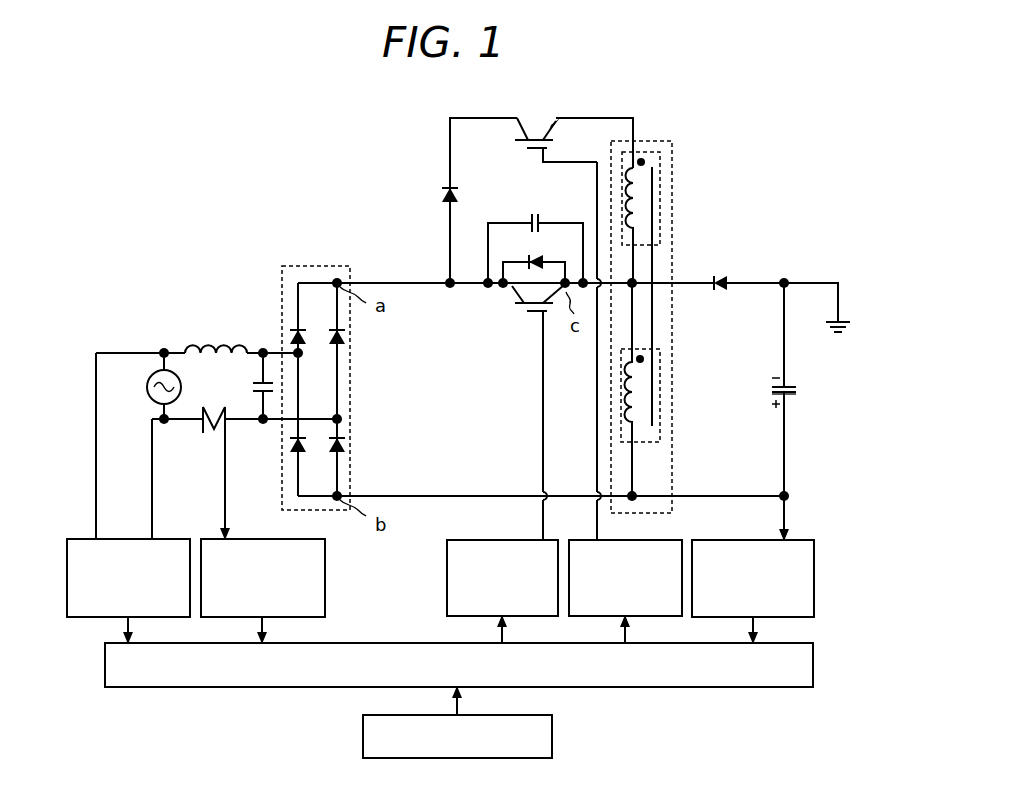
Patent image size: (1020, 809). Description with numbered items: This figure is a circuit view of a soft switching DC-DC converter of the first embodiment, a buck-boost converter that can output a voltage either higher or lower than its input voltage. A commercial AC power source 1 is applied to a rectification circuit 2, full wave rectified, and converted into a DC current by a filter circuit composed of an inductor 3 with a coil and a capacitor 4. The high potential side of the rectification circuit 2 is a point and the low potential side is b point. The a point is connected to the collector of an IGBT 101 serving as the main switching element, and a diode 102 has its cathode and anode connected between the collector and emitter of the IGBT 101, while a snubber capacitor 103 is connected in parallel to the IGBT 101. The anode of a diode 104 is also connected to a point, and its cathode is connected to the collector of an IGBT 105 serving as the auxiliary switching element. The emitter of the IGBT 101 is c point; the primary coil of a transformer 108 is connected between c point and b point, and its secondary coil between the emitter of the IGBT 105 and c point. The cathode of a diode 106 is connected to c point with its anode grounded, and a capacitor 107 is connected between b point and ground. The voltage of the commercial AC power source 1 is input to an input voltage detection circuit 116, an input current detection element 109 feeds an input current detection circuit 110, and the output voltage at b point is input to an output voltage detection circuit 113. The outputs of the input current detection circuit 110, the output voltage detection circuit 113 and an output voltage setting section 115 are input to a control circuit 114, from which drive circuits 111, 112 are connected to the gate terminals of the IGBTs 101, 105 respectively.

The commercial AC power source 1 is at (146, 388).
The rectification circuit 2 is at (318, 266).
The inductor 3 is at (222, 344).
The capacitor 4 is at (250, 389).
The IGBT 101 is at (517, 312).
The diode 102 is at (565, 248).
The snubber capacitor 103 is at (537, 211).
The diode 104 is at (440, 197).
The IGBT 105 is at (522, 147).
The diode 106 is at (724, 276).
The capacitor 107 is at (798, 388).
The transformer 108 is at (685, 313).
The input current detection element 109 is at (206, 437).
The input current detection circuit 110 is at (268, 538).
The drive circuit 111 is at (468, 538).
The drive circuit 112 is at (636, 538).
The output voltage detection circuit 113 is at (816, 572).
The control circuit 114 is at (816, 664).
The output voltage setting section 115 is at (554, 734).
The input voltage detection circuit 116 is at (88, 618).